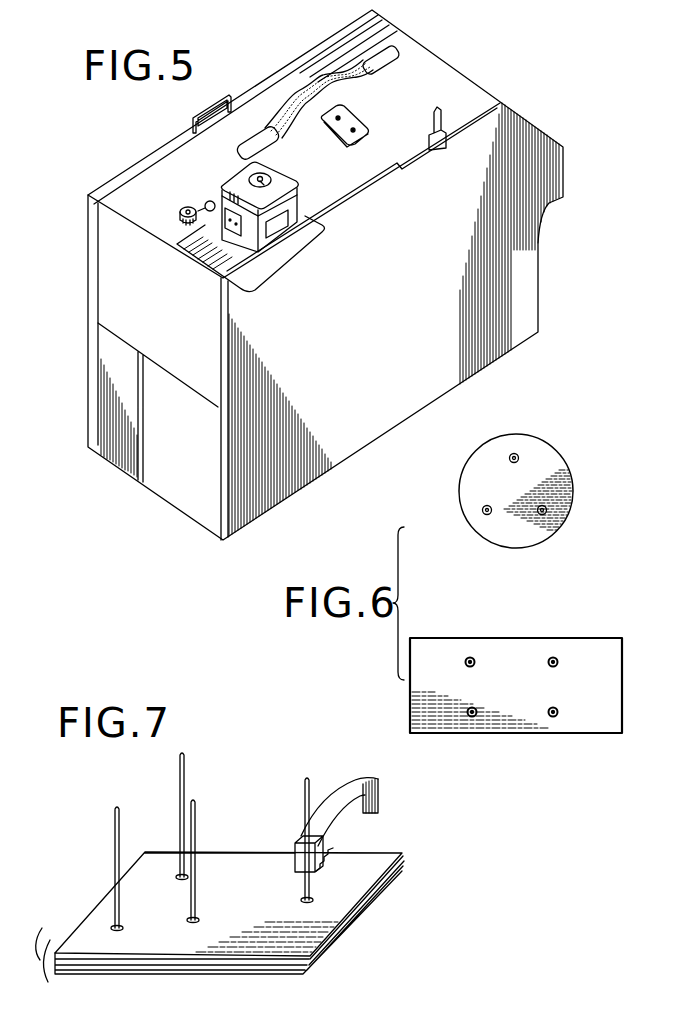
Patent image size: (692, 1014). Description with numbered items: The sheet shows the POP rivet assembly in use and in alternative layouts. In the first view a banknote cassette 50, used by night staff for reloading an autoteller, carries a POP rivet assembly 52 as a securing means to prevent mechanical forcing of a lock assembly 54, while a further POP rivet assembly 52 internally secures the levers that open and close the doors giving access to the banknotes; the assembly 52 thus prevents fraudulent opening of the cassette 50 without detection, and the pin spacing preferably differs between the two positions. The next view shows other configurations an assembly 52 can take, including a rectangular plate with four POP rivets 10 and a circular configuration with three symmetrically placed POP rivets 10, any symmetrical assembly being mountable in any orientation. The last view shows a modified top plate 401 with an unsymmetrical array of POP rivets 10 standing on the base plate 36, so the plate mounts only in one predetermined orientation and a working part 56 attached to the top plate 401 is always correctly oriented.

In FIG. 6, the POP rivet 10 is at (483, 510).
In FIG. 7, the POP rivet 10 is at (163, 806).
In FIG. 7, the base plate 36 is at (383, 893).
In FIG. 5, the banknote cassette 50 is at (467, 340).
In FIG. 5, the POP rivet assembly 52 is at (354, 119).
In FIG. 6, the POP rivet assembly 52 is at (529, 534).
In FIG. 5, the lock assembly 54 is at (278, 174).
In FIG. 7, the working part 56 is at (379, 797).
In FIG. 7, the modified top plate 401 is at (393, 851).